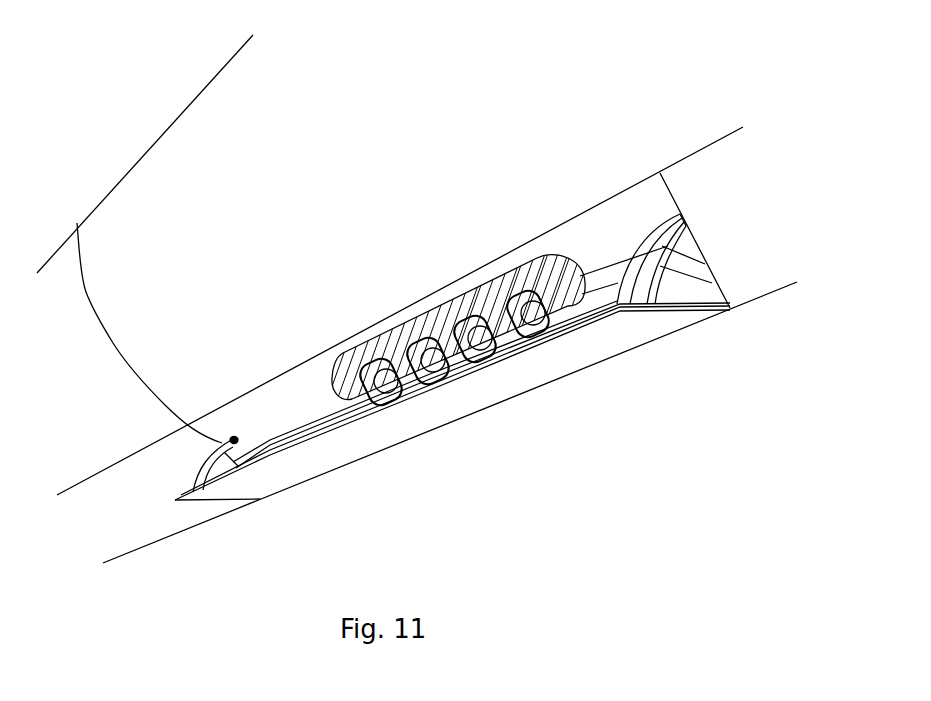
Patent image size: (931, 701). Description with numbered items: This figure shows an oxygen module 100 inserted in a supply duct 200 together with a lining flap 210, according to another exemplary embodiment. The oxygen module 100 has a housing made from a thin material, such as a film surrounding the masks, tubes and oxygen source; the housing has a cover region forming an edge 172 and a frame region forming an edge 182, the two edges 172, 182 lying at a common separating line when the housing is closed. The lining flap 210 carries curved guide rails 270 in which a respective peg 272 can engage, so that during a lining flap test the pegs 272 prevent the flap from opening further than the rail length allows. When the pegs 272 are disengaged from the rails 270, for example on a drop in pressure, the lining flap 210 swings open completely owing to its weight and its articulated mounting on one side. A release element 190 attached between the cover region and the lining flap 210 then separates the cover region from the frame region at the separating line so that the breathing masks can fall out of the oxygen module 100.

The oxygen module 100 is at (465, 350).
The edge of the cover region 172 is at (502, 344).
The edge of the frame region 182 is at (474, 300).
The release element 190 is at (410, 363).
The supply duct 200 is at (592, 228).
The lining flap 210 is at (554, 366).
The guide rails 270 is at (194, 479).
The peg 272 is at (232, 436).